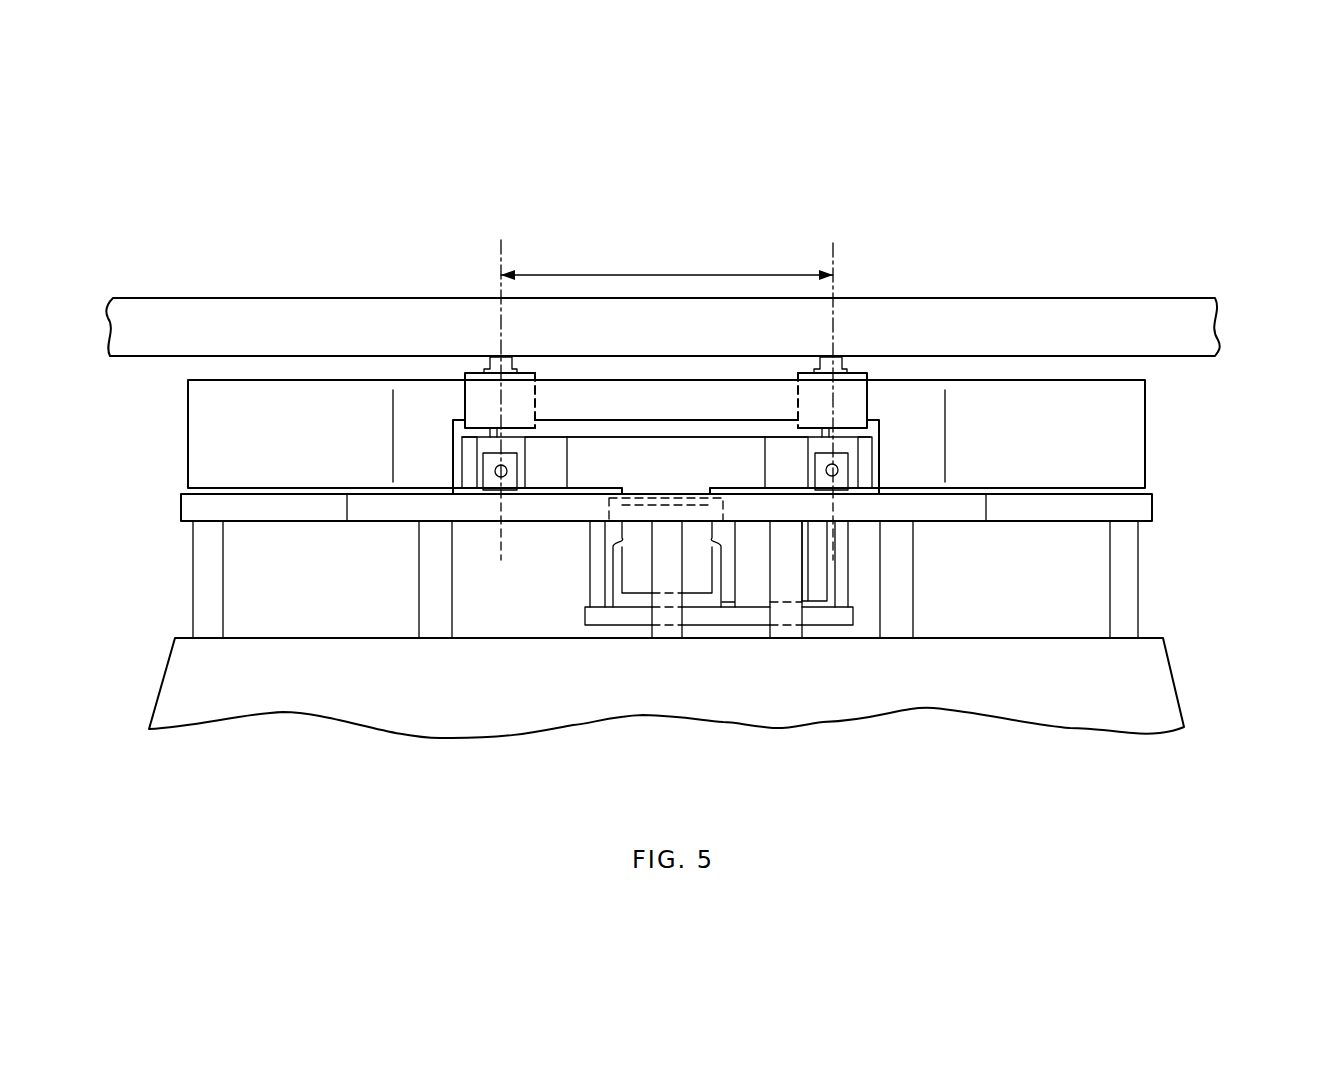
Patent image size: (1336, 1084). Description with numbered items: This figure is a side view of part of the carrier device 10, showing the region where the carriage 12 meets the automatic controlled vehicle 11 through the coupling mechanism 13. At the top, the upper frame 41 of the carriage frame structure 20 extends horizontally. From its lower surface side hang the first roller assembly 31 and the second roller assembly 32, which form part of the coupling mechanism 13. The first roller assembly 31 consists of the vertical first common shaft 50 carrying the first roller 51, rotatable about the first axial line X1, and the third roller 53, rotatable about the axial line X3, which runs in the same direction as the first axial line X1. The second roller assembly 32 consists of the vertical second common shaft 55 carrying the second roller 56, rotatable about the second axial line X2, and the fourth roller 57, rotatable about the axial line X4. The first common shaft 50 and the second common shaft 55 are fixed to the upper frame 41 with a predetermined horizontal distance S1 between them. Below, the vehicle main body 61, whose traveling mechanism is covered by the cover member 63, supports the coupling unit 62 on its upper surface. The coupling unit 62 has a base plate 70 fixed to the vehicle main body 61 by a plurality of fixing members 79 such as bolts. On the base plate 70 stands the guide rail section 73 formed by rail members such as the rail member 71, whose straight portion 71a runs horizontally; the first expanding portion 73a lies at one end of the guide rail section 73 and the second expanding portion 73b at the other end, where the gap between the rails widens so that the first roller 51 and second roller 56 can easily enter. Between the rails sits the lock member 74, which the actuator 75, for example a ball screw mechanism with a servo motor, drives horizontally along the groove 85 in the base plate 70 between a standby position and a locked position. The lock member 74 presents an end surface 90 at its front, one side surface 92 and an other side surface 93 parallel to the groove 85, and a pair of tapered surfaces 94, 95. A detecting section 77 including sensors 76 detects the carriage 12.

The carrier device 10 is at (1070, 198).
The automatic controlled vehicle 11 is at (1072, 730).
The carriage 12 is at (1222, 343).
The coupling mechanism 13 is at (300, 378).
The frame structure 20 is at (173, 296).
The first roller assembly 31 is at (873, 369).
The second roller assembly 32 is at (473, 356).
The upper frame 41 is at (1128, 310).
The first common shaft 50 is at (820, 362).
The first roller 51 is at (868, 398).
The third roller 53 is at (860, 458).
The second common shaft 55 is at (512, 362).
The second roller 56 is at (465, 400).
The fourth roller 57 is at (474, 462).
The vehicle main body 61 is at (1180, 686).
The coupling unit 62 is at (307, 527).
The cover member 63 is at (452, 712).
The base plate 70 is at (1155, 505).
The rail member 71 is at (220, 433).
The straight portion 71a is at (704, 395).
The guide rail section 73 is at (1150, 462).
The first expanding portion 73a is at (1148, 396).
The second expanding portion 73b is at (188, 397).
The lock member 74 is at (683, 420).
The actuator 75 is at (645, 572).
The sensor 76 is at (494, 473).
The detecting section 77 is at (862, 498).
The fixing member 79 is at (193, 596).
The groove 85 is at (608, 505).
The end surface 90 is at (618, 455).
The one side surface 92 is at (880, 438).
The other side surface 93 is at (452, 440).
The tapered surface 94 is at (787, 462).
The tapered surface 95 is at (550, 455).
The predetermined distance S1 is at (677, 274).
The first axial line X1 is at (834, 248).
The second axial line X2 is at (500, 255).
The axial line X3 is at (836, 546).
The axial line X4 is at (498, 548).